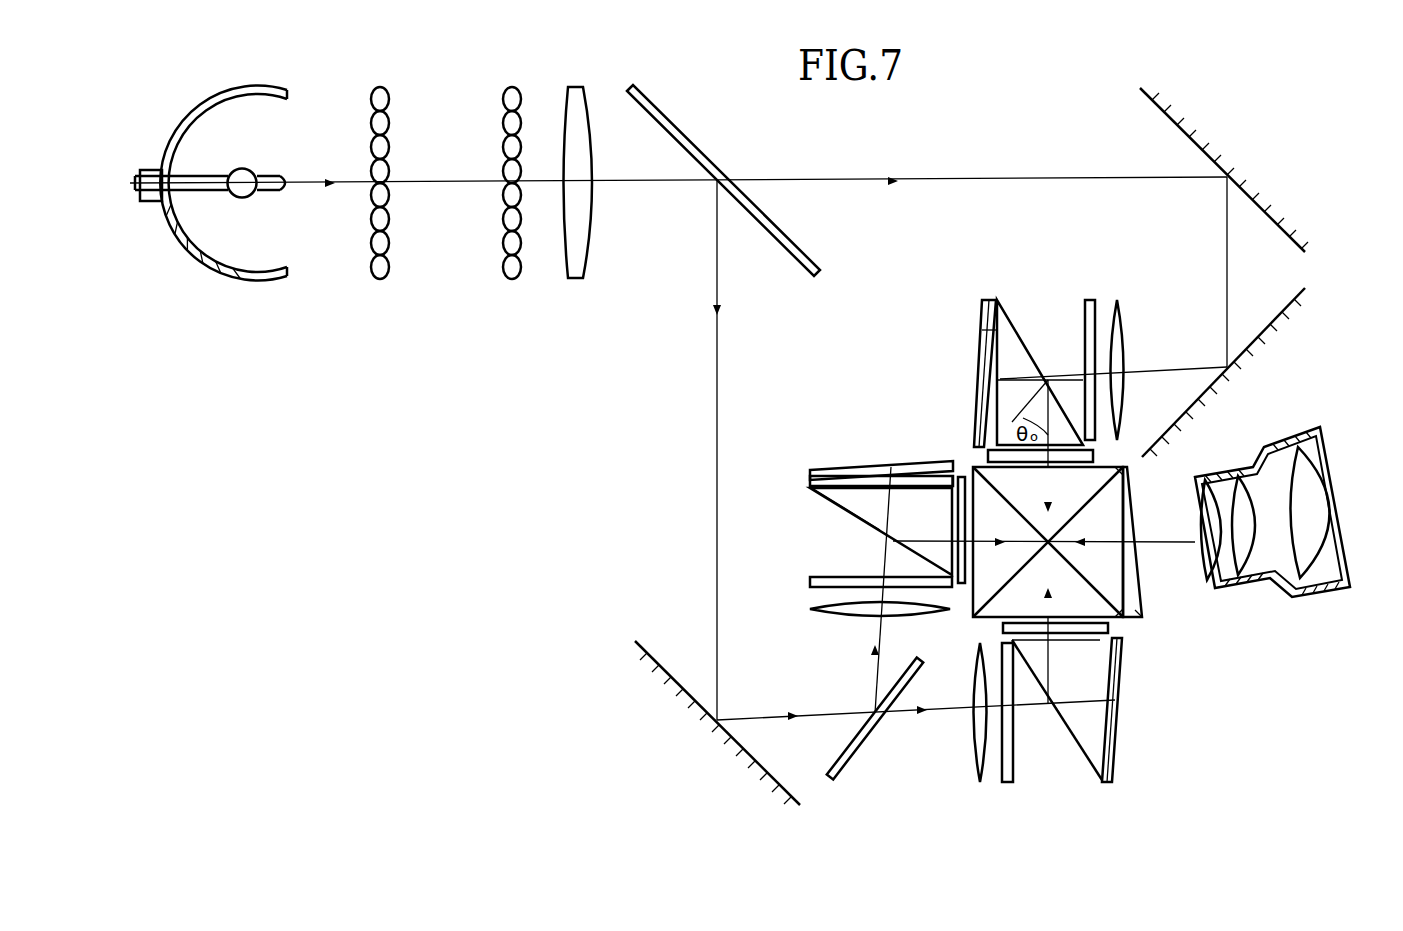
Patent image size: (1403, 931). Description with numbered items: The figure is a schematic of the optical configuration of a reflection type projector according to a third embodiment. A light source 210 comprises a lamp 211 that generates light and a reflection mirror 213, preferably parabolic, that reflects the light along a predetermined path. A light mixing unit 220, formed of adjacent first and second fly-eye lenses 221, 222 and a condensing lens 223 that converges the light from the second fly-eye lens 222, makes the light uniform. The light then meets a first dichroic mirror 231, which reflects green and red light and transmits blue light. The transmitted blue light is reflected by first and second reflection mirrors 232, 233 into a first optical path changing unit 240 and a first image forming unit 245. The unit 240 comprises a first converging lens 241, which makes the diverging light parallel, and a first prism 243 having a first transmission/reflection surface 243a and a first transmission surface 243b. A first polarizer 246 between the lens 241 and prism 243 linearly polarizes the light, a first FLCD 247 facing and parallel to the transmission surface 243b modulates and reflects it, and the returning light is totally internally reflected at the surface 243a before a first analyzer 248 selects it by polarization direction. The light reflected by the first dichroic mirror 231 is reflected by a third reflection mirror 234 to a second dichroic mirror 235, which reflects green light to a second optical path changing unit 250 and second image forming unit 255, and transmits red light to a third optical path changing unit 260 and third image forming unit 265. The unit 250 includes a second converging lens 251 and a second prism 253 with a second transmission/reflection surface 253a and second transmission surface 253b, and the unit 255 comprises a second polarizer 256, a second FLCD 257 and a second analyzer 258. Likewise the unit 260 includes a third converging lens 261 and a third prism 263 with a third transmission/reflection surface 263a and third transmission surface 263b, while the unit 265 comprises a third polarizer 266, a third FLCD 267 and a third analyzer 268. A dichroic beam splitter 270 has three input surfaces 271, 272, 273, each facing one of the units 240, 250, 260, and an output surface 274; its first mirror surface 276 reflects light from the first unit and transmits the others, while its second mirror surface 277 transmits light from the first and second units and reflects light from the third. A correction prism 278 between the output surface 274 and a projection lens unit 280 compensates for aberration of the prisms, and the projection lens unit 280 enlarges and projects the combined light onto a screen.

The light source 210 is at (214, 197).
The lamp 211 is at (250, 170).
The reflection mirror 213 is at (268, 279).
The light mixing unit 220 is at (483, 196).
The first fly-eye lens 221 is at (380, 283).
The second fly-eye lens 222 is at (512, 283).
The condensing lens 223 is at (580, 280).
The first dichroic mirror 231 is at (692, 146).
The first reflection mirror 232 is at (1267, 222).
The second reflection mirror 233 is at (1258, 333).
The third reflection mirror 234 is at (805, 800).
The second dichroic mirror 235 is at (858, 752).
The first optical path changing unit 240 is at (1033, 344).
The first converging lens 241 is at (1093, 330).
The first prism 243 is at (1114, 348).
The first transmission/reflection surface 243a is at (1018, 335).
The first transmission surface 243b is at (990, 330).
The first image forming unit 245 is at (965, 381).
The first polarizer 246 is at (985, 300).
The first FLCD 247 is at (980, 340).
The first analyzer 248 is at (995, 436).
The second optical path changing unit 250 is at (745, 540).
The second converging lens 251 is at (810, 609).
The second prism 253 is at (775, 540).
The second transmission/reflection surface 253a is at (913, 556).
The second transmission surface 253b is at (845, 482).
The second image forming unit 255 is at (761, 524).
The second polarizer 256 is at (810, 582).
The second FLCD 257 is at (808, 480).
The second analyzer 258 is at (810, 468).
The third optical path changing unit 260 is at (1075, 750).
The third converging lens 261 is at (982, 783).
The third prism 263 is at (1075, 732).
The third transmission/reflection surface 263a is at (1060, 718).
The third transmission surface 263b is at (1102, 780).
The third image forming unit 265 is at (1133, 702).
The third polarizer 266 is at (1013, 763).
The third FLCD 267 is at (1118, 733).
The third analyzer 268 is at (1093, 640).
The dichroic beam splitter 270 is at (1117, 521).
The first input surface 271 is at (1123, 462).
The second input surface 272 is at (962, 588).
The third input surface 273 is at (1108, 624).
The output surface 274 is at (1123, 526).
The first mirror surface 276 is at (1097, 583).
The second mirror surface 277 is at (1097, 497).
The correction prism 278 is at (1152, 616).
The projection lens unit 280 is at (1299, 422).